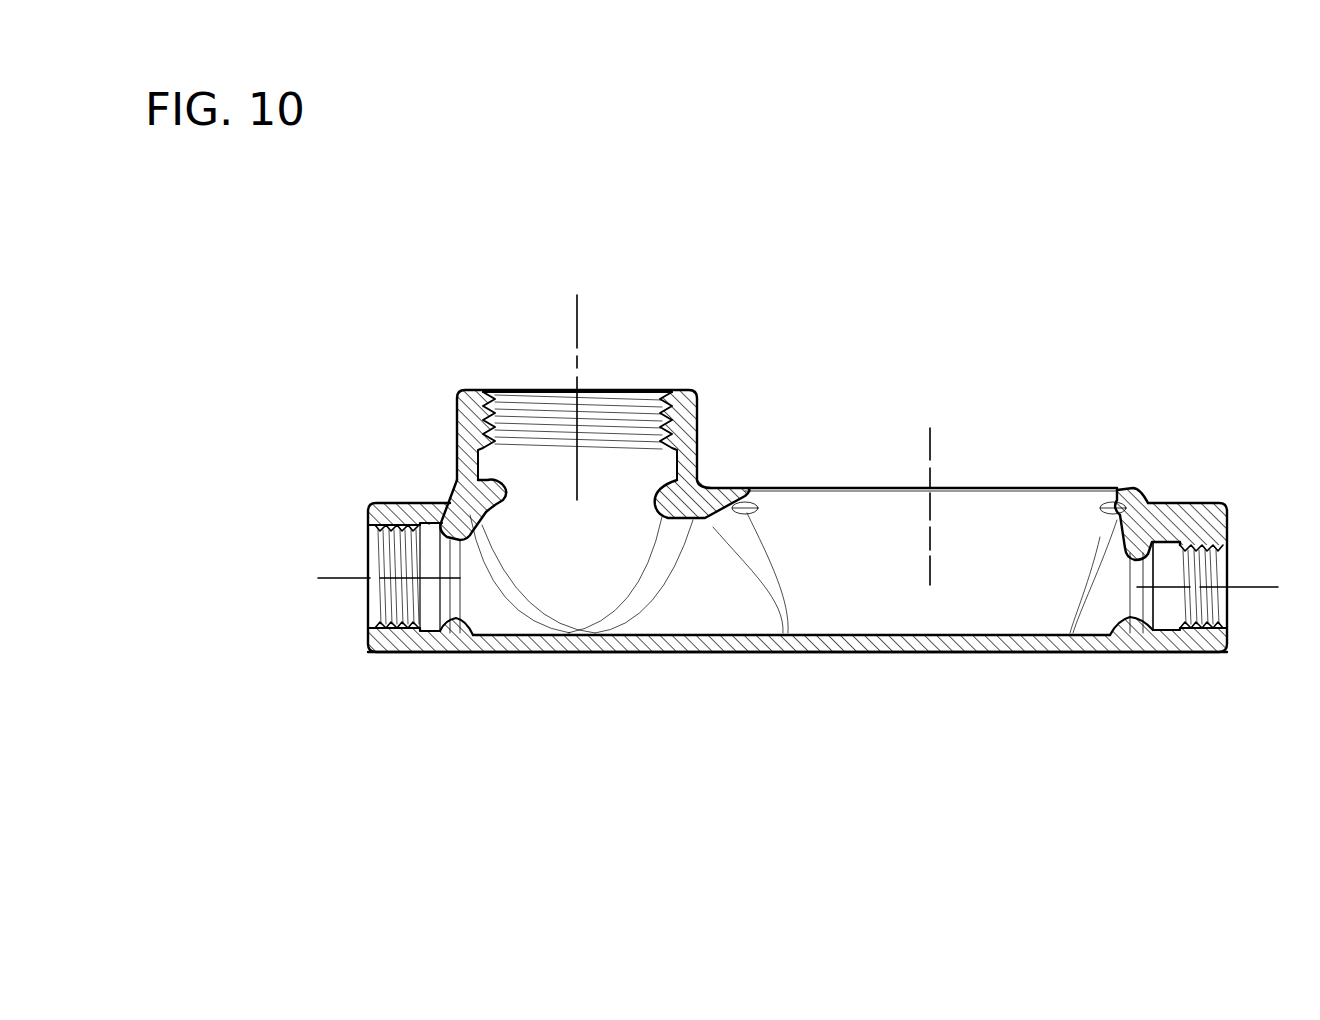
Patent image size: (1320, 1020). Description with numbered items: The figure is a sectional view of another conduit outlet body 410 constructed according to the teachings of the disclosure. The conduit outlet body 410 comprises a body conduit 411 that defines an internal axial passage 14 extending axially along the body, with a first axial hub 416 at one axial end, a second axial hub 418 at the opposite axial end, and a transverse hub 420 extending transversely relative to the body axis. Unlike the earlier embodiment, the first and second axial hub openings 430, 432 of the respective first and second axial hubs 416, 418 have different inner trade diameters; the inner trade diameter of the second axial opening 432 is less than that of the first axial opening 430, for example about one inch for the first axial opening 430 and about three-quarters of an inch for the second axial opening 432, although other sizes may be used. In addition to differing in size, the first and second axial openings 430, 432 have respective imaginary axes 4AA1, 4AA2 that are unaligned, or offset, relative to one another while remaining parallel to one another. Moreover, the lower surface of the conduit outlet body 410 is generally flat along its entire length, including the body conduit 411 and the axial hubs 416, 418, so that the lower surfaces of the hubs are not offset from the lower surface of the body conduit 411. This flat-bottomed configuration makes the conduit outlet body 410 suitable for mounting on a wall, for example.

The conduit outlet body 410 is at (1165, 330).
The transverse hub 420 is at (688, 388).
The first axial hub opening 430 is at (397, 553).
The second axial hub opening 432 is at (1207, 560).
The first axial hub 416 is at (367, 638).
The second axial hub 418 is at (1228, 636).
The body conduit 411 is at (900, 640).
The internal axial passage 14 is at (712, 580).
The imaginary axis of first axial opening 4AA1 is at (433, 588).
The imaginary axis of second axial opening 4AA2 is at (1133, 633).